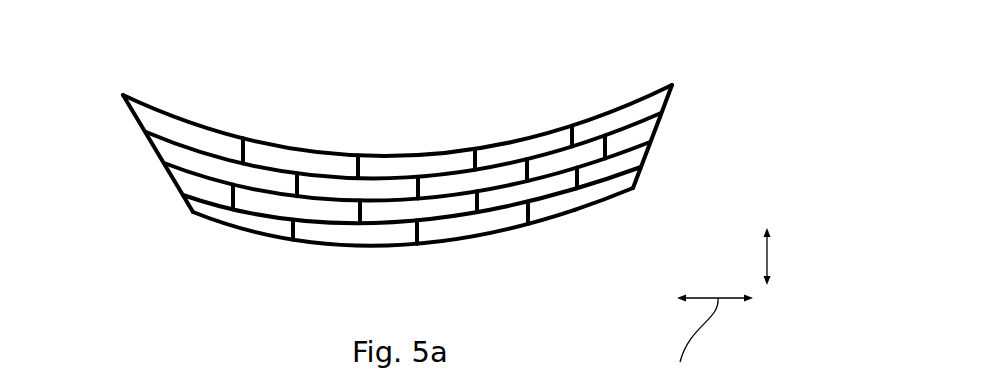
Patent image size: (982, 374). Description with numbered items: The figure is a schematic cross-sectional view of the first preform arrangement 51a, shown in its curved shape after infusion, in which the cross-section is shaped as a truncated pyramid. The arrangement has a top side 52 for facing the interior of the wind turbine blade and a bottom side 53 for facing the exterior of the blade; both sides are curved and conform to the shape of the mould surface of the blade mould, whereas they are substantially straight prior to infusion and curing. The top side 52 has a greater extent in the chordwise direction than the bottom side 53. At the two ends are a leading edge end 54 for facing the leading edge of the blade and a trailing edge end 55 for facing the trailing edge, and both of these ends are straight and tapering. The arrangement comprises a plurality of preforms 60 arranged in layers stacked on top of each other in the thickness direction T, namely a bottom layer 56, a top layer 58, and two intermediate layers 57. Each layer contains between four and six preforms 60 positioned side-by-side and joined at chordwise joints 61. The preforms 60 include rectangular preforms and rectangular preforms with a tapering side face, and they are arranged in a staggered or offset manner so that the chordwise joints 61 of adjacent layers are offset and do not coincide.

The first preform arrangement 51a is at (246, 94).
The top side 52 is at (335, 150).
The bottom side 53 is at (313, 241).
The leading edge end 54 is at (736, 149).
The trailing edge end 55 is at (153, 170).
The bottom layer 56 is at (636, 188).
The intermediate layer 57 is at (653, 138).
The top layer 58 is at (670, 97).
The preform 60 is at (437, 165).
The chordwise joint 61 is at (476, 150).
The thickness direction T is at (770, 258).